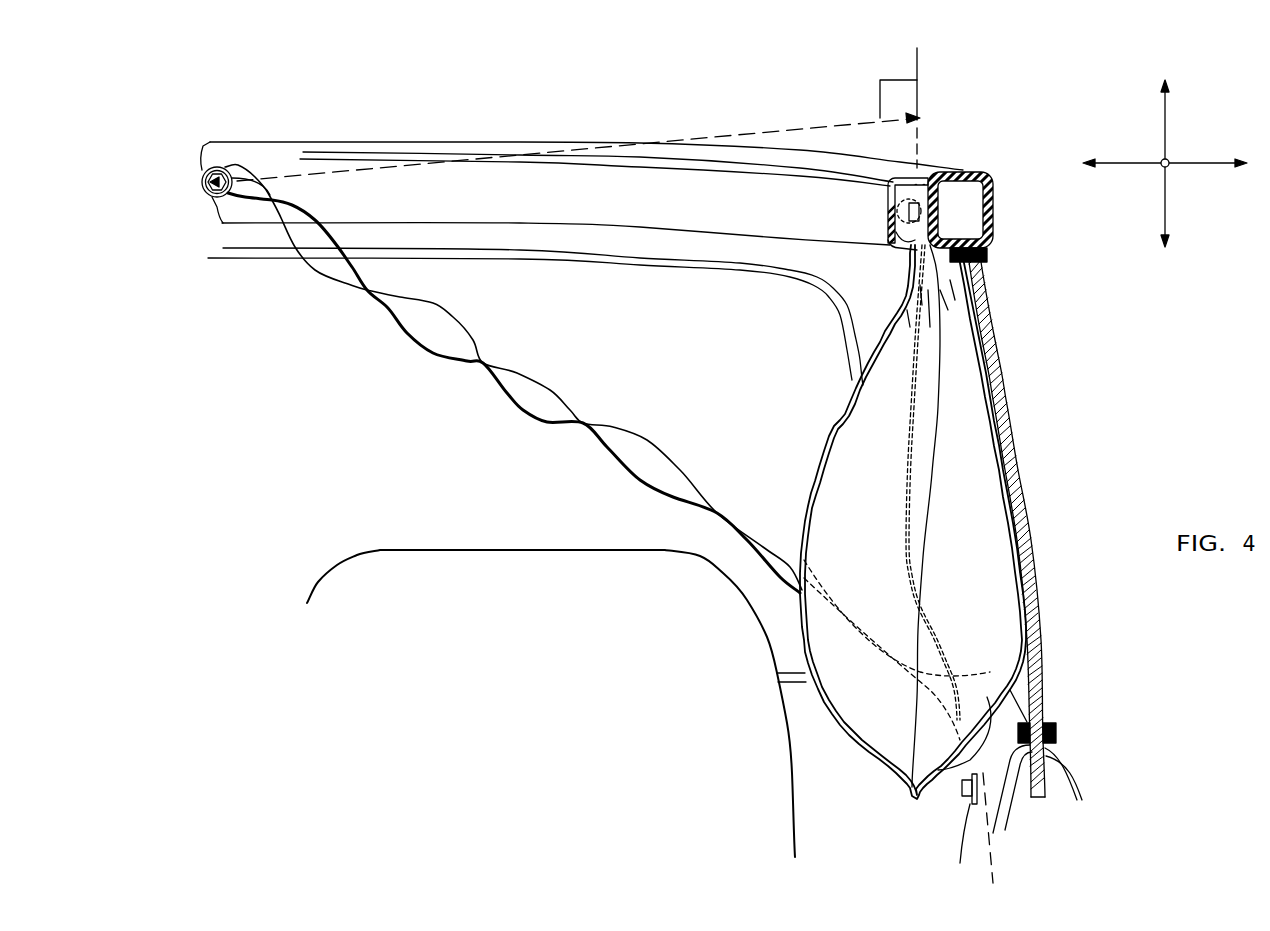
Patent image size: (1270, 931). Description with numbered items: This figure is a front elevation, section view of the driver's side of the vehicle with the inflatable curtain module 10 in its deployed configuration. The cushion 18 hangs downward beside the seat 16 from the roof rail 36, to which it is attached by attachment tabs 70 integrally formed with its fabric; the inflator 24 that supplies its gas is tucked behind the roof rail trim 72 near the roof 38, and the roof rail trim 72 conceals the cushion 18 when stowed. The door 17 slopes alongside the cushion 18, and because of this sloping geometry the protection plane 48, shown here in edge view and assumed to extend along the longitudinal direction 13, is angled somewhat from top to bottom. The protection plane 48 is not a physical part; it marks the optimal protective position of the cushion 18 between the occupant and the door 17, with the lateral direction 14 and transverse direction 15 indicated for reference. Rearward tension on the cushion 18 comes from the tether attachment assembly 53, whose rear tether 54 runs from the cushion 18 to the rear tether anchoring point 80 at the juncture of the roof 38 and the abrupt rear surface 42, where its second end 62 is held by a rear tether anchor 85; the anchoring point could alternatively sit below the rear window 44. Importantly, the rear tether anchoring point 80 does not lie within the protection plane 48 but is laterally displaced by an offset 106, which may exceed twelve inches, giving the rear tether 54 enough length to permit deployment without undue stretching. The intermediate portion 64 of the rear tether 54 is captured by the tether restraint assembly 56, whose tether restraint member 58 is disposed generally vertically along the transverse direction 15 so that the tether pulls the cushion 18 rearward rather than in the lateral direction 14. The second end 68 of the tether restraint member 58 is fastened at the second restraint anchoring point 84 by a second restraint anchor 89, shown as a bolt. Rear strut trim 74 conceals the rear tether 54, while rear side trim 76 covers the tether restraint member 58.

The inflatable curtain module 10 is at (957, 150).
The longitudinal direction 13 is at (1161, 168).
The lateral direction 14 is at (1207, 167).
The transverse direction 15 is at (1167, 118).
The seat 16 is at (520, 620).
The door 17 is at (1024, 668).
The cushion 18 is at (817, 480).
The inflator 24 is at (887, 207).
The roof rail 36 is at (963, 170).
The roof 38 is at (458, 142).
The abrupt rear surface 42 is at (266, 400).
The rear window 44 is at (692, 389).
The protection plane 48 is at (919, 68).
The tether attachment assembly 53 is at (813, 370).
The rear tether 54 is at (532, 382).
The tether restraint assembly 56 is at (944, 704).
The tether restraint member 58 is at (950, 677).
The second end 62 is at (243, 188).
The intermediate portion 64 is at (883, 650).
The second end 68 is at (975, 700).
The attachment tab 70 is at (940, 203).
The roof rail trim 72 is at (888, 183).
The rear strut trim 74 is at (370, 153).
The rear side trim 76 is at (903, 270).
The rear tether anchoring point 80 is at (210, 160).
The second restraint anchoring point 84 is at (954, 806).
The rear tether anchor 85 is at (200, 177).
The second restraint anchor 89 is at (967, 806).
The offset 106 is at (763, 128).